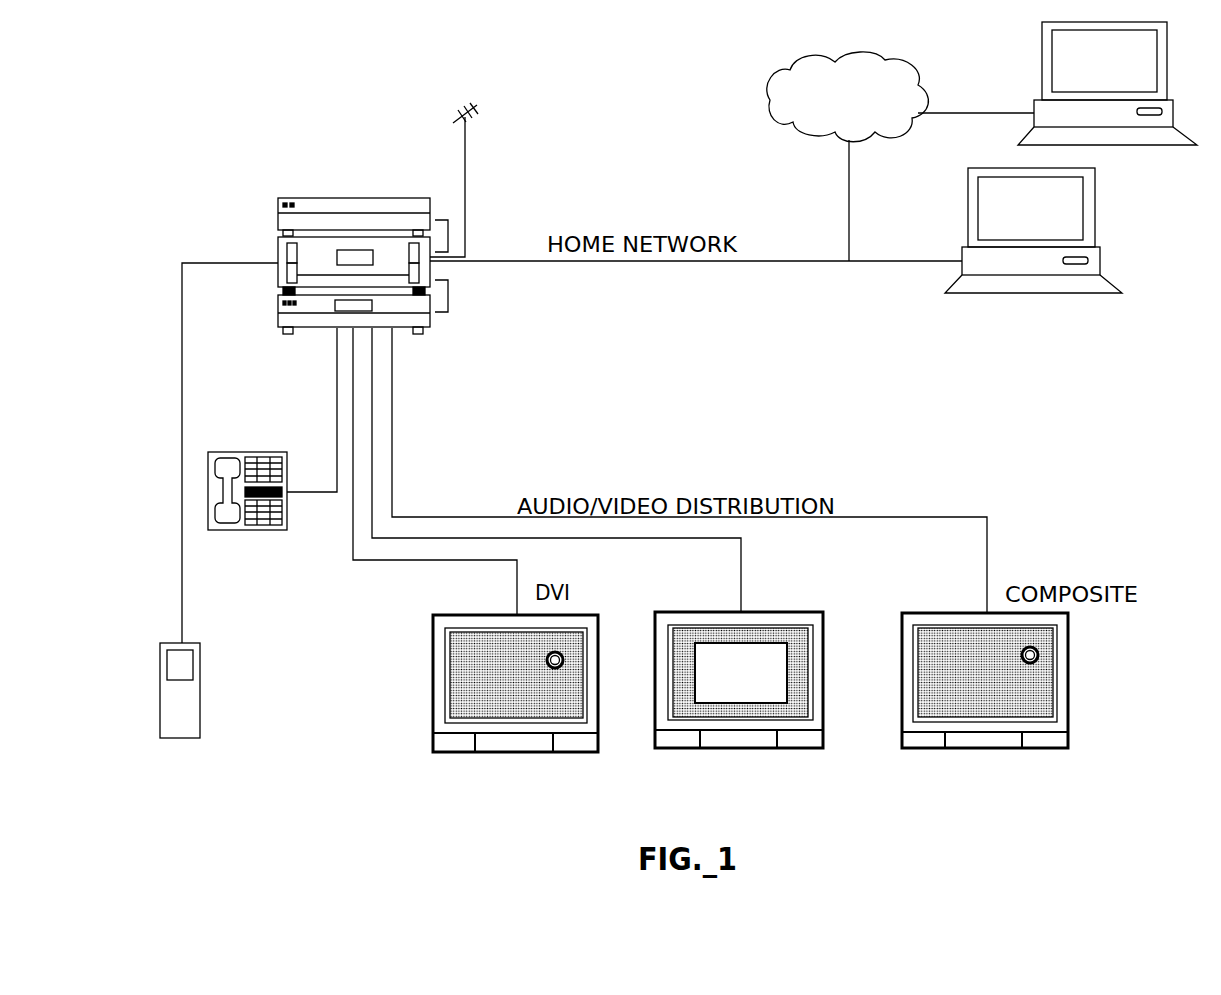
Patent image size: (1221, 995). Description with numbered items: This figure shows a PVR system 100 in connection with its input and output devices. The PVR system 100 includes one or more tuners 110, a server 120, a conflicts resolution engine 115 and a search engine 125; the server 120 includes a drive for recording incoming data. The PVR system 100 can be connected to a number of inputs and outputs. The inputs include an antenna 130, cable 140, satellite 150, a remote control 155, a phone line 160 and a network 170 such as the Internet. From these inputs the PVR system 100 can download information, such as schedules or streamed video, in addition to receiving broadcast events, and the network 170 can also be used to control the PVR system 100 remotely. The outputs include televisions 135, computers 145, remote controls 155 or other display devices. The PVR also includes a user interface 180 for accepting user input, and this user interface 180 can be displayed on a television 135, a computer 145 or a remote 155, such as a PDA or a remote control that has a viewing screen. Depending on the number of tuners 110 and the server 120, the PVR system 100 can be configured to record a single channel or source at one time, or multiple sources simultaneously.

The PVR system 100 is at (362, 233).
The tuners 110 is at (290, 250).
The conflicts resolution engine 115 is at (418, 275).
The server 120 is at (290, 280).
The search engine 125 is at (418, 258).
The antenna 130 is at (480, 112).
The televisions 135 is at (455, 687).
The cable 140 is at (290, 312).
The computers 145 is at (1065, 60).
The satellite 150 is at (290, 222).
The remote control 155 is at (200, 710).
The phone line 160 is at (313, 492).
The network 170 is at (783, 120).
The user interface 180 is at (770, 677).